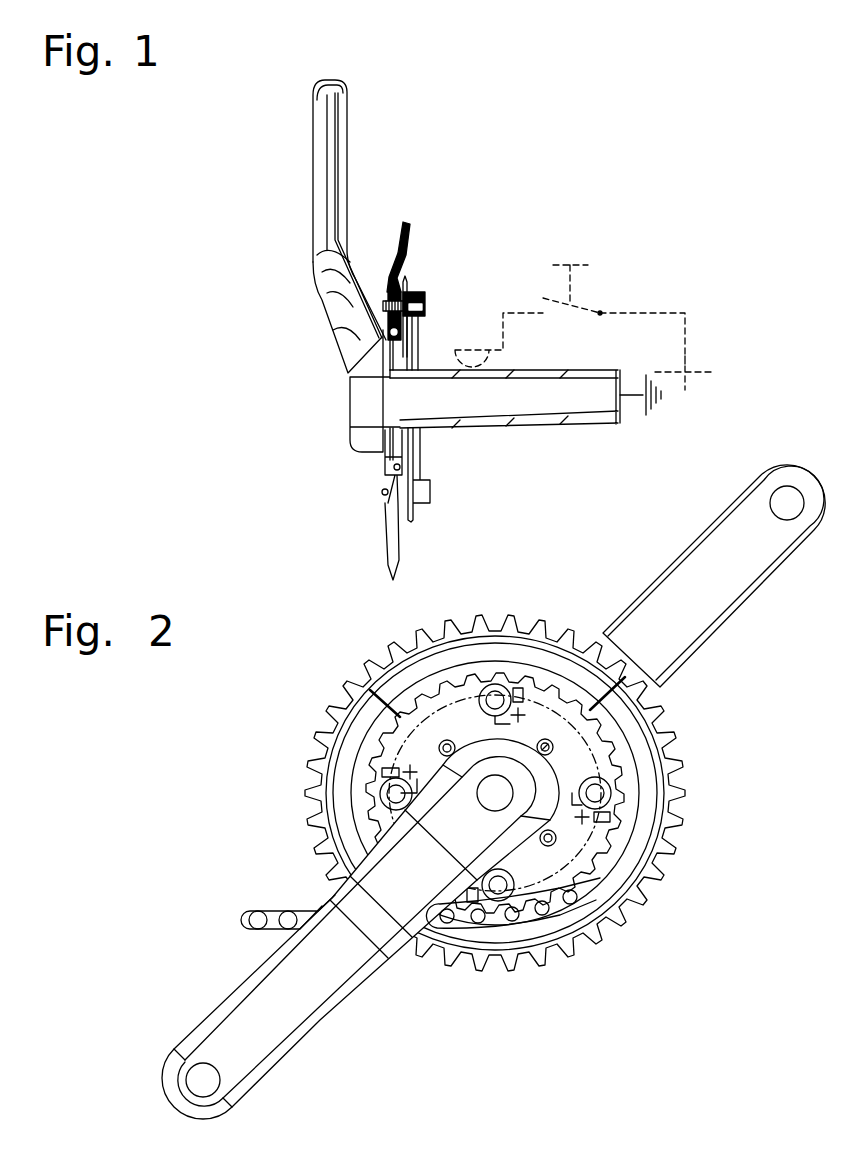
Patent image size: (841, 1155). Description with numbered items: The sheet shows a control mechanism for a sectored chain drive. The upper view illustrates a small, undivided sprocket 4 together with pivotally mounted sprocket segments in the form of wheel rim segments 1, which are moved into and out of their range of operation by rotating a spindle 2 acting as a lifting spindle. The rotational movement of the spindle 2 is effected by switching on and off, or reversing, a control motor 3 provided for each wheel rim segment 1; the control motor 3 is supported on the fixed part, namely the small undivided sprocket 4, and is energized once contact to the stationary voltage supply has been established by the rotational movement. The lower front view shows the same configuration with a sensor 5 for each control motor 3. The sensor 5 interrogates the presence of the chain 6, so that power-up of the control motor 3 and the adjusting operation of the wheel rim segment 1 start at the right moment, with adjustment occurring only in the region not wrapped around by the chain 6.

In FIG. 1, the wheel rim segment 1 is at (400, 243).
In FIG. 1, the spindle 2 is at (383, 306).
In FIG. 1, the control motor 3 is at (423, 294).
In FIG. 1, the small undivided sprocket 4 is at (392, 287).
In FIG. 2, the sensor 5 is at (525, 889).
In FIG. 2, the chain 6 is at (497, 915).